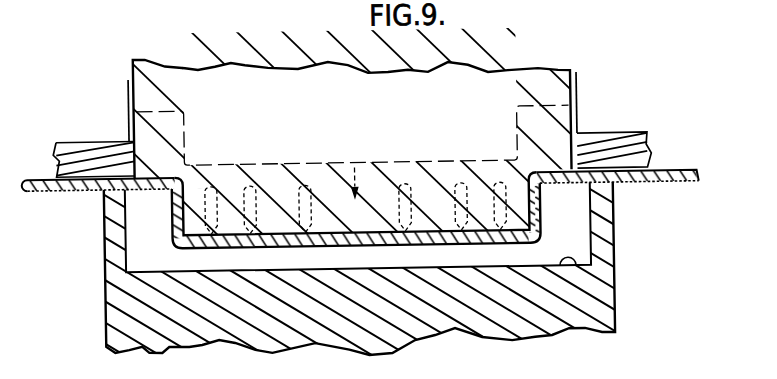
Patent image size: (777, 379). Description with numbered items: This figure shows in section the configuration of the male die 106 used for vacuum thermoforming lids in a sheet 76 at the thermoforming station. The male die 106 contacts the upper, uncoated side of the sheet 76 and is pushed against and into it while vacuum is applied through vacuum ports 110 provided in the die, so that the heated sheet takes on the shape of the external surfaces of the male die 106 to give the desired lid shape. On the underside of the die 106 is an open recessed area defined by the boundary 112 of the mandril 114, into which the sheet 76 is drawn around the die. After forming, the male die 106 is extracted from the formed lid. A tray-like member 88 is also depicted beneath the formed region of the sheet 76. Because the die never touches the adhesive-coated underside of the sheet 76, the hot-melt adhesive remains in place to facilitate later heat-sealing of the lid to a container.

The sheet 76 is at (676, 174).
The tray 88 is at (665, 186).
The male die 106 is at (505, 84).
The vacuum ports 110 is at (263, 198).
The boundary 112 is at (575, 266).
The mandril 114 is at (122, 298).